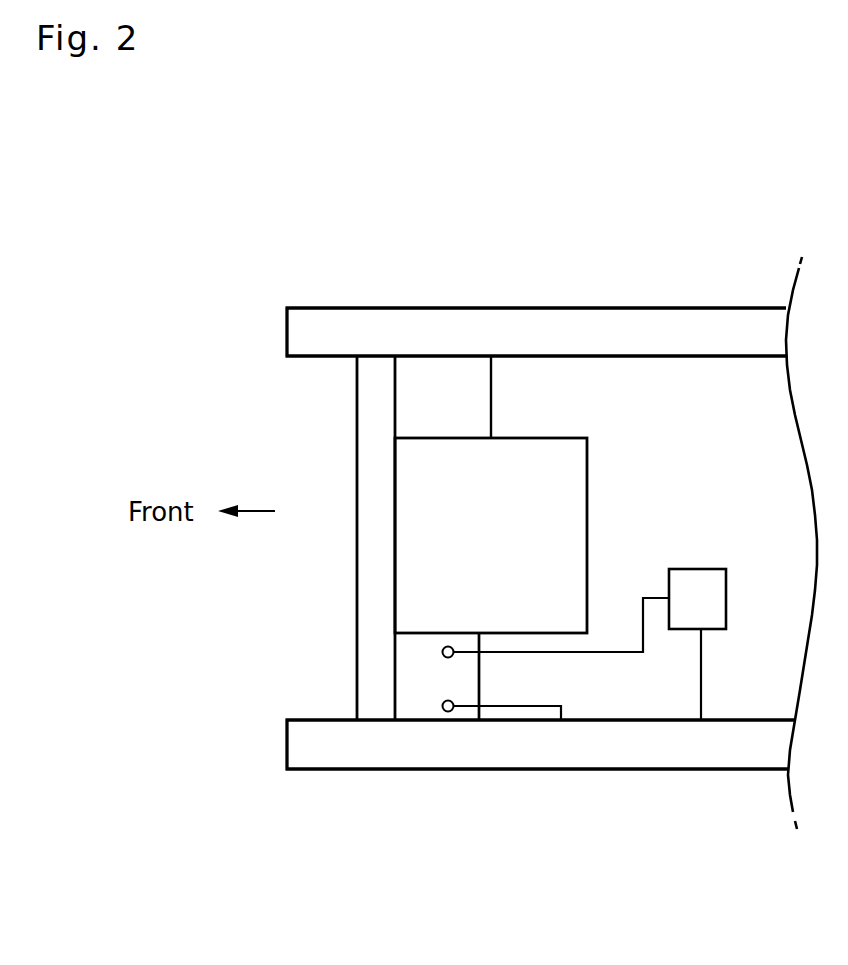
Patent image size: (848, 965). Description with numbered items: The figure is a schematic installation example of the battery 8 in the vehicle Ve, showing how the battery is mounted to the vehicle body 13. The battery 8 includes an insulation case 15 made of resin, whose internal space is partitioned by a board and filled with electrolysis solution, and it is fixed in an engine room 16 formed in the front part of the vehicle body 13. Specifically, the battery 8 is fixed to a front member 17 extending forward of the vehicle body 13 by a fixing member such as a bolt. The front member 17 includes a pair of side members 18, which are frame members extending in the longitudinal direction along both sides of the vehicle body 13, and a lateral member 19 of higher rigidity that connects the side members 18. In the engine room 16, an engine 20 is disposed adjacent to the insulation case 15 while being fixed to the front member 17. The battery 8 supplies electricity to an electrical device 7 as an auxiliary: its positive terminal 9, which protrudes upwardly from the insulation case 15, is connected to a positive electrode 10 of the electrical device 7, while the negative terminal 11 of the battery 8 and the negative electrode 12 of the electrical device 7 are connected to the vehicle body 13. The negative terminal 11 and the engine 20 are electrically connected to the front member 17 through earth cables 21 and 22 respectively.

The vehicle Ve is at (757, 208).
The vehicle body 13 is at (653, 264).
The side members 18 is at (500, 316).
The front member 17 is at (553, 800).
The lateral member 19 is at (366, 530).
The earth cable 22 is at (492, 400).
The engine 20 is at (577, 459).
The engine room 16 is at (713, 514).
The electrical device 7 is at (712, 594).
The positive electrode 10 is at (668, 597).
The negative electrode 12 is at (705, 630).
The positive terminal 9 is at (442, 652).
The negative terminal 11 is at (447, 713).
The earth cable 21 is at (562, 714).
The battery 8 is at (468, 681).
The insulation case 15 is at (531, 676).